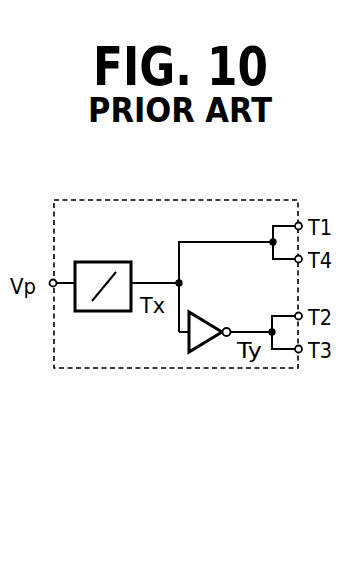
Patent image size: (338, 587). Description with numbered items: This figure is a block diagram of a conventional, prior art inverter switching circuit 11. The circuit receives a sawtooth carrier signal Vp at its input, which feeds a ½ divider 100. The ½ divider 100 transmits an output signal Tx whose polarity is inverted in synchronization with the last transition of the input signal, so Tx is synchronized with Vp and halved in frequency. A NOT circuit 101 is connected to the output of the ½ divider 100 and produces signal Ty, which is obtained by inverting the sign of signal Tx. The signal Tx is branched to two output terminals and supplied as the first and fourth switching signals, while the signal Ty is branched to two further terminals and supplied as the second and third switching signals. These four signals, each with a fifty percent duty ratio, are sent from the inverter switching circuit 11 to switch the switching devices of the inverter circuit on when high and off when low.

The inverter switching circuit 11 is at (253, 200).
The ½ divider 100 is at (105, 262).
The NOT circuit 101 is at (211, 313).